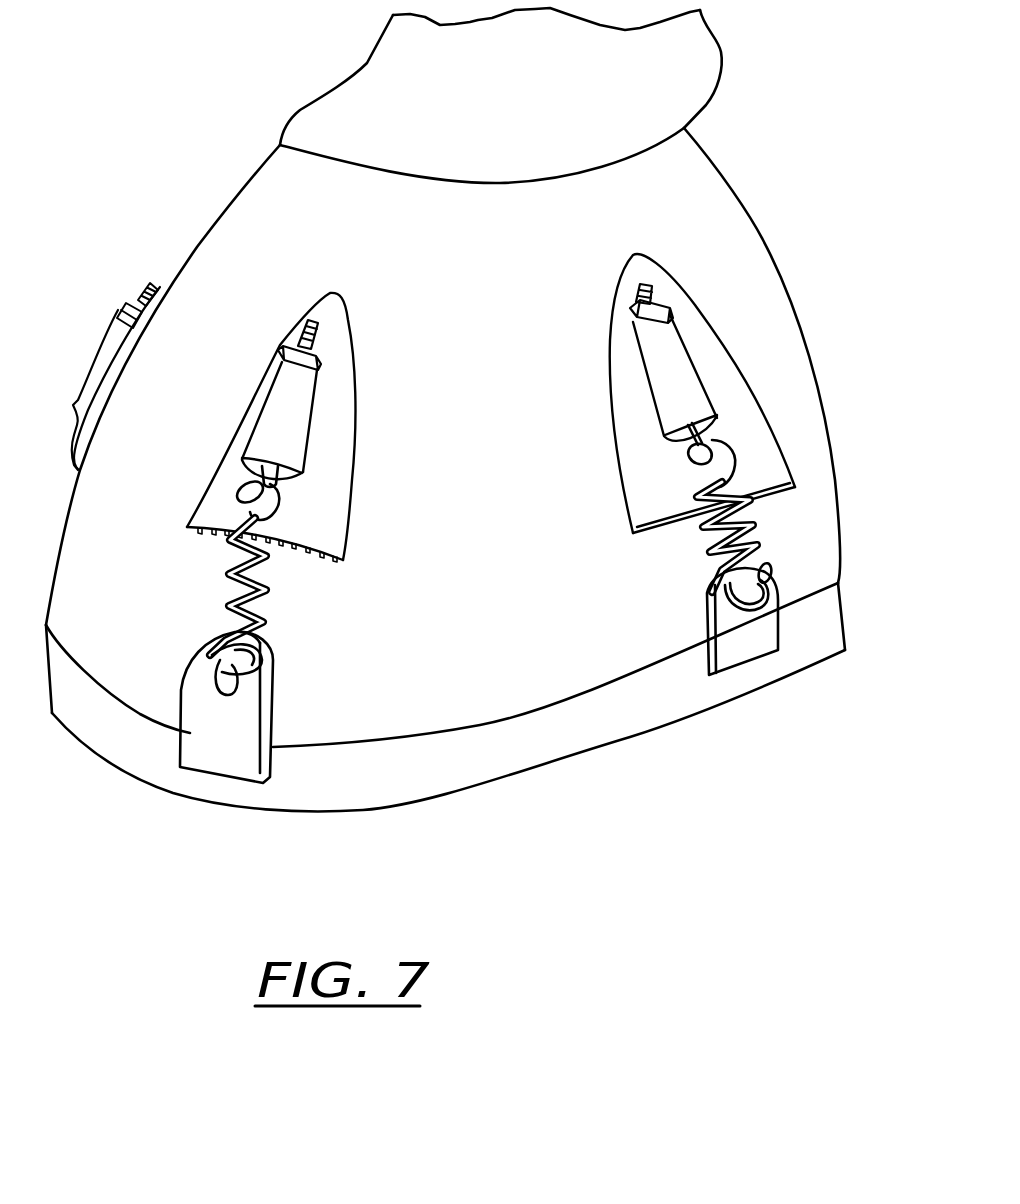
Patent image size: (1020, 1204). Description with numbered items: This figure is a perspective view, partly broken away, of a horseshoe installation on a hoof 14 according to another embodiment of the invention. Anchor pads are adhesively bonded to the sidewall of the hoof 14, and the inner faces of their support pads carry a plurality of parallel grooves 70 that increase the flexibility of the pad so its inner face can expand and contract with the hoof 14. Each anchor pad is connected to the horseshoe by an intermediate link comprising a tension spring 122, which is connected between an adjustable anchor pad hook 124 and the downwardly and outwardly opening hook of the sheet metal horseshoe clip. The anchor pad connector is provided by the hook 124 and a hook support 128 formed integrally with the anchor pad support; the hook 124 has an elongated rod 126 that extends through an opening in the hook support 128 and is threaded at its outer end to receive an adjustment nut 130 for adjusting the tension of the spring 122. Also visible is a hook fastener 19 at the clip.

The hoof 14 is at (490, 628).
The hook fastener 19 is at (192, 680).
The grooves 70 is at (300, 556).
The tension spring 122 is at (227, 598).
The anchor pad hook 124 is at (237, 480).
The elongated rod 126 is at (313, 333).
The hook support 128 is at (278, 397).
The nut 130 is at (320, 363).